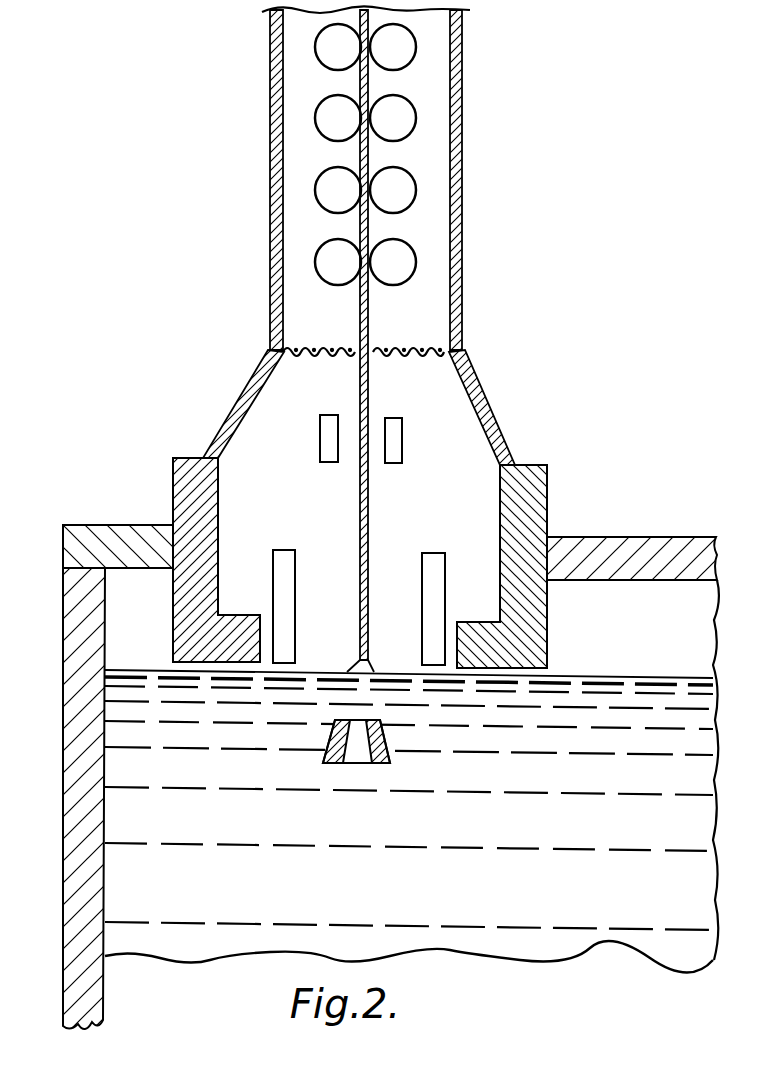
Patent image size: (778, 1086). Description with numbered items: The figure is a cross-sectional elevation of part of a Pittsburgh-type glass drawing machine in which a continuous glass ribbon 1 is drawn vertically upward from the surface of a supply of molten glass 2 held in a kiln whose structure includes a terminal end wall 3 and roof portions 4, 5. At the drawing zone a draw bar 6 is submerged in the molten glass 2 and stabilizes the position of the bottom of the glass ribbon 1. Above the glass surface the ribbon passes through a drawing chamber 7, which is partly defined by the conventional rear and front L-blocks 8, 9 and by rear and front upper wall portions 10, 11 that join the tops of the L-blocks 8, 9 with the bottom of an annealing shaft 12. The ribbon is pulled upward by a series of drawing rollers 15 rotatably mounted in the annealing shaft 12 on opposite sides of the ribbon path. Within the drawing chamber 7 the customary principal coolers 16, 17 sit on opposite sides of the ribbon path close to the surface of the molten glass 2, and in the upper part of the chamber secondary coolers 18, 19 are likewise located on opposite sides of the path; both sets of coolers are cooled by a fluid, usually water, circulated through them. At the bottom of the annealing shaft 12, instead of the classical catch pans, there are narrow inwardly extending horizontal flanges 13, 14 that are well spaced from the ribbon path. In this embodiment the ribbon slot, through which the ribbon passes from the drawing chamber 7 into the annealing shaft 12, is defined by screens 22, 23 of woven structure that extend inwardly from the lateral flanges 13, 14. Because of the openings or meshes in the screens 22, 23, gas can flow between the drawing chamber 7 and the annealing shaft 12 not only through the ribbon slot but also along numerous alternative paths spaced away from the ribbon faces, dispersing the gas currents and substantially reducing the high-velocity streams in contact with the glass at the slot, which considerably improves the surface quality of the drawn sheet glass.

The partition wall 1 is at (366, 531).
The molten glass 2 is at (347, 900).
The terminal end wall 3 is at (85, 725).
The roof portion 4 is at (118, 543).
The roof portion 5 is at (637, 567).
The draw bar 6 is at (336, 764).
The drawing chamber 7 is at (436, 491).
The rear L-block 8 is at (200, 498).
The front L-block 9 is at (520, 497).
The rear upper wall portion 10 is at (230, 420).
The front upper wall portion 11 is at (490, 412).
The annealing shaft 12 is at (474, 188).
The horizontal flange 13 is at (268, 335).
The horizontal flange 14 is at (460, 320).
The drawing rollers 15 is at (335, 117).
The principal cooler 16 is at (290, 578).
The principal cooler 17 is at (430, 582).
The secondary cooler 18 is at (333, 428).
The secondary cooler 19 is at (390, 430).
The screen 22 is at (333, 356).
The screen 23 is at (400, 356).